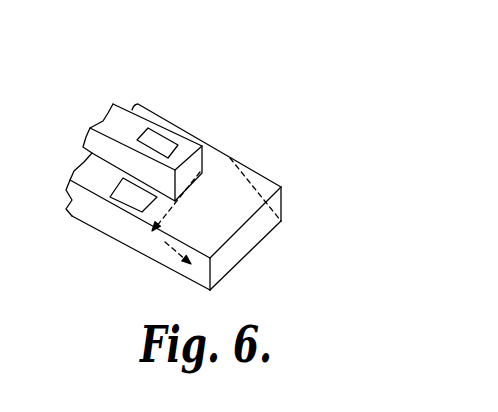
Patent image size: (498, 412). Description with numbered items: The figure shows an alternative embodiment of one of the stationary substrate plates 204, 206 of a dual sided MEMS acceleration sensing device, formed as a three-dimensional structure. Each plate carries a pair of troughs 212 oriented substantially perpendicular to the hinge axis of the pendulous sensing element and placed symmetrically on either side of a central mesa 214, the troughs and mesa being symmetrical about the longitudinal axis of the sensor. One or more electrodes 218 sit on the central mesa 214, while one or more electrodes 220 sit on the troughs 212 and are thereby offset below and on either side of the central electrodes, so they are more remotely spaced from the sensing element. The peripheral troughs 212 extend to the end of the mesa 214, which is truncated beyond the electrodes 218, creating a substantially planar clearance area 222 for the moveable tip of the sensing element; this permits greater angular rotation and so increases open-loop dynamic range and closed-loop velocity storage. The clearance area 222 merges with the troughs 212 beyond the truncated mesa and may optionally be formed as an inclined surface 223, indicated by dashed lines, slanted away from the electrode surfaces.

The substrate plate 204 is at (365, 79).
The substrate plate 206 is at (317, 107).
The trough 212 is at (120, 165).
The central mesa 214 is at (122, 123).
The electrode 218 is at (214, 159).
The electrode 220 is at (195, 161).
The clearance area 222 is at (210, 232).
The inclined surface 223 is at (187, 265).